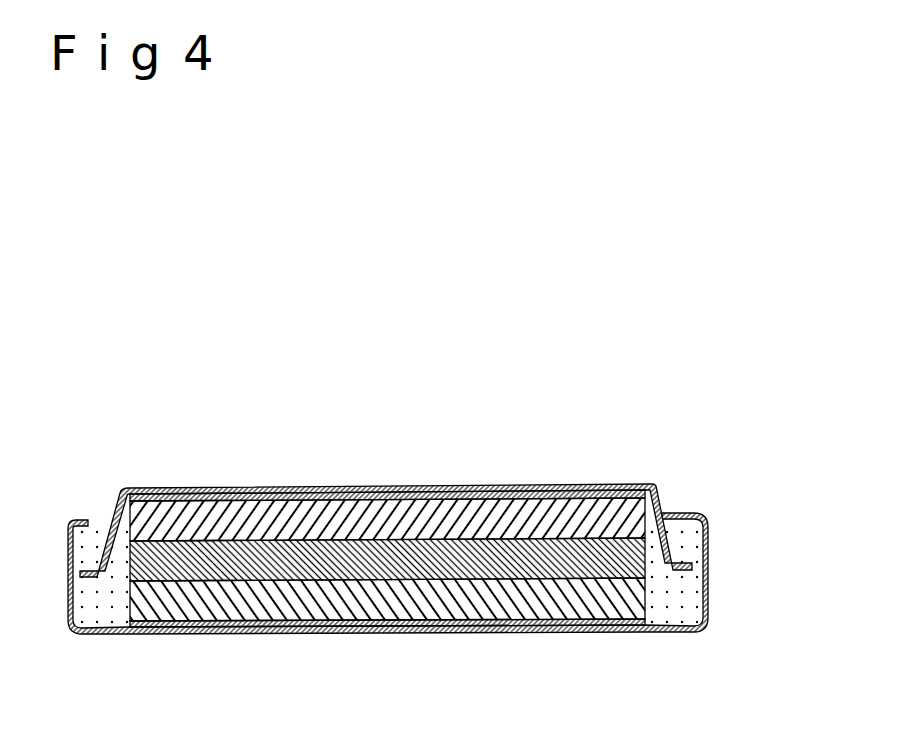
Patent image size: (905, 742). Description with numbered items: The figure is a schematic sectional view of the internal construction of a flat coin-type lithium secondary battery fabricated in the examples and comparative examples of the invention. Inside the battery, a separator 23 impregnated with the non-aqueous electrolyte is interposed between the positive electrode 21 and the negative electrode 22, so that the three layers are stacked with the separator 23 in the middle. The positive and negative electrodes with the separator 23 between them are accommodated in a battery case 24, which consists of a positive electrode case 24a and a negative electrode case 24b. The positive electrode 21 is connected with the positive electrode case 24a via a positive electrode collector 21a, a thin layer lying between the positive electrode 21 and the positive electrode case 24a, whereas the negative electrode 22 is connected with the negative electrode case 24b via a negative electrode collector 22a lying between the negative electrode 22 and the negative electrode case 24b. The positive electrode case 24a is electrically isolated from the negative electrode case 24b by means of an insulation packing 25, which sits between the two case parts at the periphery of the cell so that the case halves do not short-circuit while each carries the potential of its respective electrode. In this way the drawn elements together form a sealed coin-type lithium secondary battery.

The positive electrode 21 is at (570, 607).
The positive electrode collector 21a is at (377, 613).
The negative electrode 22 is at (540, 505).
The negative electrode collector 22a is at (366, 503).
The separator 23 is at (598, 533).
The battery case 24 is at (458, 593).
The positive electrode case 24a is at (708, 560).
The negative electrode case 24b is at (665, 485).
The insulation packing 25 is at (678, 607).